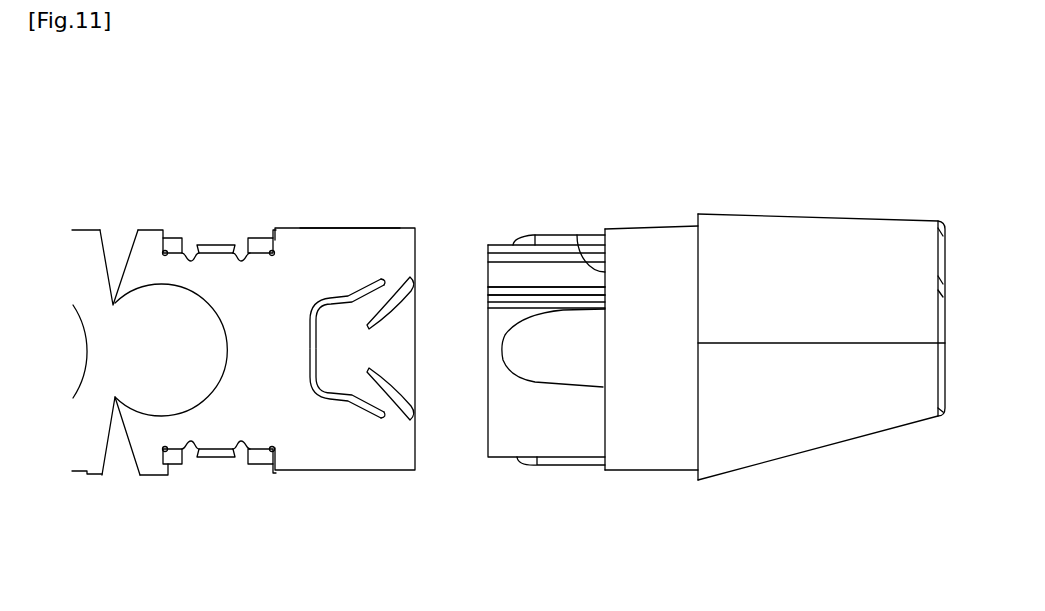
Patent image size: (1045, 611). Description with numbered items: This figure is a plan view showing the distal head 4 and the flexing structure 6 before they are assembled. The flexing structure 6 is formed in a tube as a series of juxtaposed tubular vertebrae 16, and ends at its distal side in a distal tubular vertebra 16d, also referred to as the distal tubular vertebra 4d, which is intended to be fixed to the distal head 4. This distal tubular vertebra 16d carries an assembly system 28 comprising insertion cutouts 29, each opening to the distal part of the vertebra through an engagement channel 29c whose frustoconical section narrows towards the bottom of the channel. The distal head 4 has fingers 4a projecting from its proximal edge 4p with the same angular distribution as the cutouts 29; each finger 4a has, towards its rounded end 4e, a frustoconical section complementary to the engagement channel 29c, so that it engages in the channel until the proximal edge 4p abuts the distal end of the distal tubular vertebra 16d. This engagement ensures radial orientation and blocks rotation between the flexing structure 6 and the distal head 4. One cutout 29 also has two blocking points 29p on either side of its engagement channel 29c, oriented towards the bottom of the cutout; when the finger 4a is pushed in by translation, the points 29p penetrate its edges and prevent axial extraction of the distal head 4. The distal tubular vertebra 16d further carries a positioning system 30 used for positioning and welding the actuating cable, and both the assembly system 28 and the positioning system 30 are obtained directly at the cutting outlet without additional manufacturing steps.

The distal head 4 is at (716, 304).
The finger 4a is at (538, 346).
The proximal edge 4p is at (578, 238).
The distal tubular vertebra 4d is at (345, 241).
The rounded end 4e is at (508, 373).
The flexing structure 6 is at (127, 495).
The tubular vertebrae 16 is at (79, 243).
The distal tubular vertebra 16d is at (233, 422).
The assembly system 28 is at (453, 491).
The insertion cutout 29 is at (332, 400).
The engagement channel 29c is at (370, 345).
The blocking point 29p is at (385, 300).
The positioning system 30 is at (227, 227).